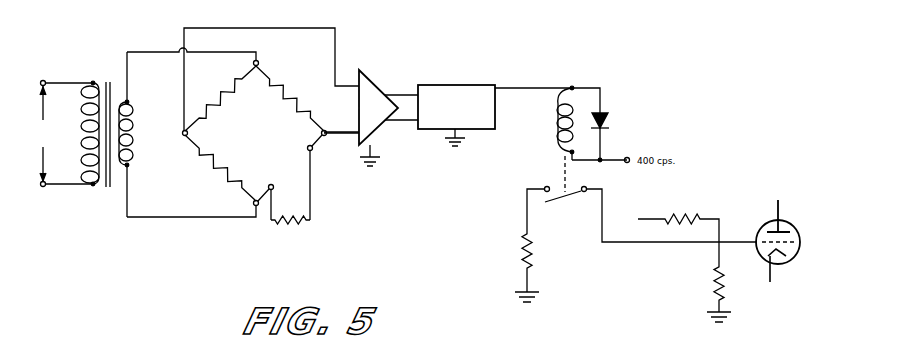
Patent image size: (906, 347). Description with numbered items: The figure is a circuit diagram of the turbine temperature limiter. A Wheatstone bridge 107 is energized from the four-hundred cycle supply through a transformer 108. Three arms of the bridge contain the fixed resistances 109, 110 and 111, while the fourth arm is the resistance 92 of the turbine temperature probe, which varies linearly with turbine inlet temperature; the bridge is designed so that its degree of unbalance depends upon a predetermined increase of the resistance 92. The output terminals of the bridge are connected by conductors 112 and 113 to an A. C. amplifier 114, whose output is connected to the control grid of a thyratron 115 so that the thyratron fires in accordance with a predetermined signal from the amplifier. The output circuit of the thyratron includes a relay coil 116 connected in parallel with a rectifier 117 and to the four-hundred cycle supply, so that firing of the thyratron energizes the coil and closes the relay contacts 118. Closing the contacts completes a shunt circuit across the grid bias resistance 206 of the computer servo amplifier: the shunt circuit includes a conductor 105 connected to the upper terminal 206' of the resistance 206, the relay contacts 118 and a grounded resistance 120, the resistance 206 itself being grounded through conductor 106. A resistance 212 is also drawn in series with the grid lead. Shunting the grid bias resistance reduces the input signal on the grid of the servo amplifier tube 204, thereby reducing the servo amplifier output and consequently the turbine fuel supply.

The transformer 108 is at (108, 82).
The conductor 112 is at (259, 27).
The Wheatstone bridge 107 is at (271, 140).
The resistance 110 is at (213, 98).
The resistance 111 is at (290, 86).
The resistance 109 is at (215, 170).
The conductor 113 is at (346, 135).
The resistance 92 is at (295, 226).
The A. C. amplifier 114 is at (367, 71).
The thyratron 115 is at (472, 85).
The relay coil 116 is at (557, 121).
The rectifier 117 is at (609, 123).
The relay contacts 118 is at (558, 184).
The conductor 106 is at (526, 211).
The grounded resistance 120 is at (522, 250).
The conductor 105 is at (638, 242).
The resistor 212 is at (668, 216).
The upper terminal 206' is at (695, 257).
The grid bias resistance 206 is at (701, 293).
The servo amplifier tube 204 is at (771, 271).